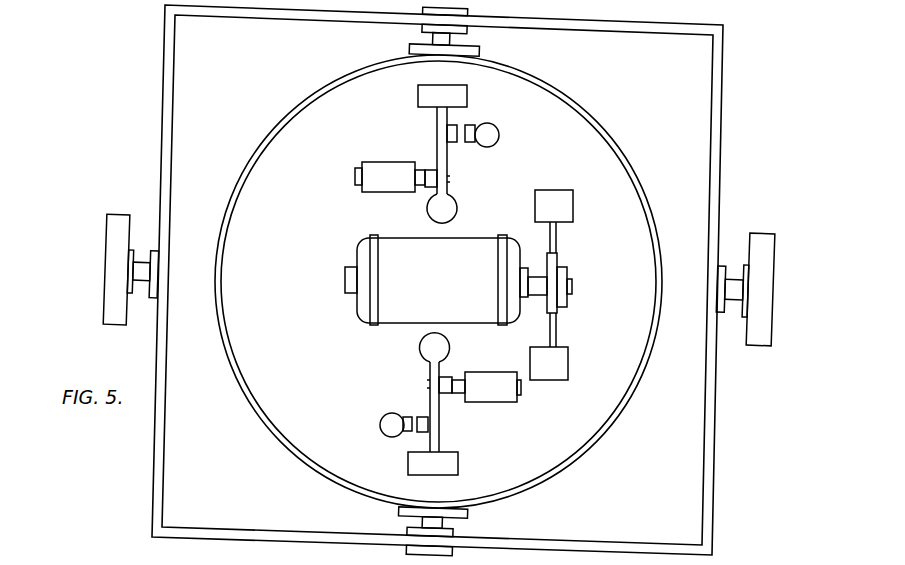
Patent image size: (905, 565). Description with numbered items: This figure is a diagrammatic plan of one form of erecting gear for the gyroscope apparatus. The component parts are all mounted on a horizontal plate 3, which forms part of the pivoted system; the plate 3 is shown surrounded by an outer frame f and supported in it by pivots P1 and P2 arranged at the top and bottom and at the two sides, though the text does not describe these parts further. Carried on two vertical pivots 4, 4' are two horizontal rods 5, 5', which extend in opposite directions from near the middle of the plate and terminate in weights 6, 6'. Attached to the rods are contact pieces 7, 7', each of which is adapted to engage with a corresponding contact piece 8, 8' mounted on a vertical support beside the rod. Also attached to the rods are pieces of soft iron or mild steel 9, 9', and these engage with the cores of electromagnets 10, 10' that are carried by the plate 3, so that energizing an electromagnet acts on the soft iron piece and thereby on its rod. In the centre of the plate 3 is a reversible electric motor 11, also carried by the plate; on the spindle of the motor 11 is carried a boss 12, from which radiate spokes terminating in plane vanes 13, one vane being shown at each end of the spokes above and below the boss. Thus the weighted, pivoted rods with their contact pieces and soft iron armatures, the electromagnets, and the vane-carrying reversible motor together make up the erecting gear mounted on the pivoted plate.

The frame f is at (630, 27).
The first pivot P1 is at (450, 39).
The second pivot P2 is at (139, 265).
The horizontal plate 3 is at (438, 281).
The vertical pivot 4 is at (421, 354).
The vertical pivot 4' is at (454, 210).
The horizontal rod 5 is at (441, 407).
The horizontal rod 5' is at (432, 150).
The weight 6 is at (433, 463).
The weight 6' is at (442, 96).
The contact piece 7 is at (417, 413).
The contact piece 7' is at (469, 118).
The contact piece 8 is at (396, 425).
The contact piece 8' is at (482, 135).
The piece of soft iron 9 is at (455, 369).
The piece of soft iron 9' is at (414, 195).
The electromagnet 10 is at (493, 387).
The electromagnet 10' is at (385, 177).
The reversible electric motor 11 is at (436, 280).
The boss 12 is at (553, 287).
The plane vane 13 is at (551, 285).